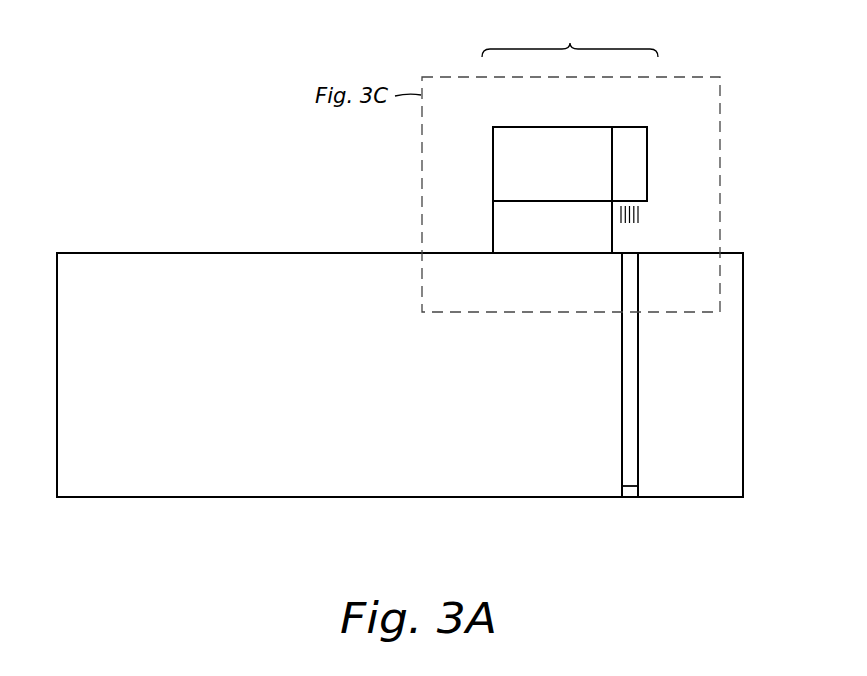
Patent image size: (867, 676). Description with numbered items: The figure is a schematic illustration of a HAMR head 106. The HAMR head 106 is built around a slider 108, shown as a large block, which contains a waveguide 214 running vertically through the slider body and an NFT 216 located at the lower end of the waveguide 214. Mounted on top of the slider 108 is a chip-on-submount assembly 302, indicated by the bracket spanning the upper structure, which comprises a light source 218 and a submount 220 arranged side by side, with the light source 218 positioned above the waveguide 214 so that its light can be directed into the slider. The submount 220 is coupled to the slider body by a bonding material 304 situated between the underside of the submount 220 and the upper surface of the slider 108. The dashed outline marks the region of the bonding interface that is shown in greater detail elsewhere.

The HAMR head 106 is at (367, 225).
The slider 108 is at (310, 393).
The waveguide 214 is at (627, 402).
The NFT 216 is at (631, 487).
The light source 218 is at (628, 139).
The submount 220 is at (535, 139).
The chip-on-submount assembly 302 is at (570, 34).
The bonding material 304 is at (507, 226).